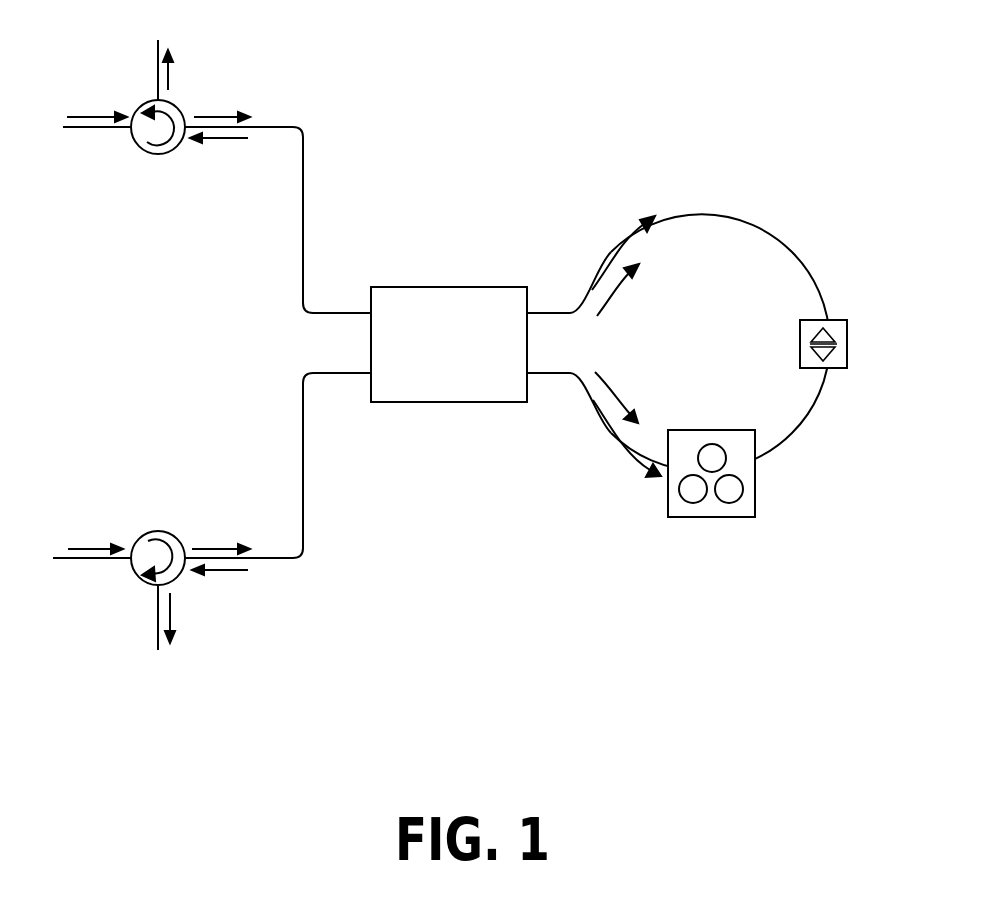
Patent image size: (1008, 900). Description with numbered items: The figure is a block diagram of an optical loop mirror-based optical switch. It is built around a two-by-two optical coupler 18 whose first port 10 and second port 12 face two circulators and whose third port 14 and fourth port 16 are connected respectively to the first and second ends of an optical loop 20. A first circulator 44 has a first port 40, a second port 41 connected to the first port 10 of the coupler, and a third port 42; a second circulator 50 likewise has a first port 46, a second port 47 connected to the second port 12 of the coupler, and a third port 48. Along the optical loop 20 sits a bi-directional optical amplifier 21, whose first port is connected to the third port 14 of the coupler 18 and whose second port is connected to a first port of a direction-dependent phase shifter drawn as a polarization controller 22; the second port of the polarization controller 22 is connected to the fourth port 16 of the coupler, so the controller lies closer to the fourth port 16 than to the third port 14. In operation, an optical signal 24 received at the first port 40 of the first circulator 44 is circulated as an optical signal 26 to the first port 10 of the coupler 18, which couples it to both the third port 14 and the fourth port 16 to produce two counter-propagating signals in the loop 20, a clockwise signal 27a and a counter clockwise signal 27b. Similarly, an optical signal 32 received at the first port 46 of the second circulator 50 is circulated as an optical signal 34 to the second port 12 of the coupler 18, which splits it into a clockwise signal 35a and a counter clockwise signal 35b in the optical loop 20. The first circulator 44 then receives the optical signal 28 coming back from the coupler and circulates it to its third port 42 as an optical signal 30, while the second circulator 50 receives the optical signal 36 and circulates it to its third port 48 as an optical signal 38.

The first port of the 2×2 optical coupler 10 is at (340, 313).
The second port of the 2×2 optical coupler 12 is at (335, 373).
The third port of the 2×2 optical coupler 14 is at (562, 313).
The fourth port of the 2×2 optical coupler 16 is at (553, 373).
The 2×2 optical coupler 18 is at (445, 402).
The optical loop 20 is at (805, 267).
The bi-directional optical amplifier 21 is at (847, 328).
The polarization controller 22 is at (718, 517).
The optical signal 24 is at (90, 115).
The optical signal 26 is at (222, 110).
The clockwise (CW) signal 27a is at (712, 303).
The counter clockwise (CCW) signal 27b is at (730, 377).
The optical signal 28 is at (222, 137).
The optical signal 30 is at (172, 73).
The optical signal 32 is at (90, 548).
The optical signal 34 is at (200, 548).
The CW signal 35a is at (578, 220).
The CCW signal 35b is at (558, 463).
The optical signal 36 is at (223, 572).
The optical signal 38 is at (170, 625).
The first port of the first circulator 40 is at (65, 130).
The second port of the first circulator 41 is at (268, 127).
The third port of the first circulator 42 is at (157, 55).
The first circulator 44 is at (142, 152).
The first port of the second circulator 46 is at (85, 560).
The second port of the second circulator 47 is at (272, 560).
The third port of the second circulator 48 is at (158, 623).
The second circulator 50 is at (158, 528).